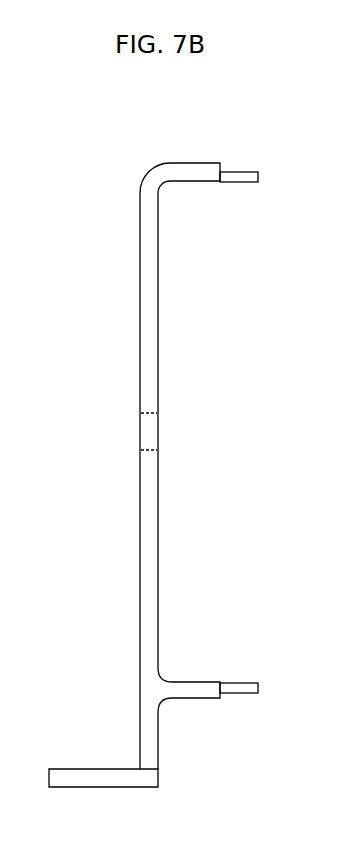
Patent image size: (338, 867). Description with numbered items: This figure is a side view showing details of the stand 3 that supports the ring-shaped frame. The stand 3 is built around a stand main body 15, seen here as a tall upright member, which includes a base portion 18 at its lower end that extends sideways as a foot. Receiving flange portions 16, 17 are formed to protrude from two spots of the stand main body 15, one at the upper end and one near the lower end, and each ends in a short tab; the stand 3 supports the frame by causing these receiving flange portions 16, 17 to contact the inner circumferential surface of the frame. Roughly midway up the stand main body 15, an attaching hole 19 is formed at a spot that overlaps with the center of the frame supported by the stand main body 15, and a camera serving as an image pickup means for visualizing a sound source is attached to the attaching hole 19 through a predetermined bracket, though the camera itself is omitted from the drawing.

The stand 3 is at (186, 296).
The stand main body 15 is at (151, 558).
The receiving flange portion 16 is at (243, 177).
The receiving flange portion 17 is at (241, 686).
The base portion 18 is at (97, 777).
The attaching hole 19 is at (152, 428).